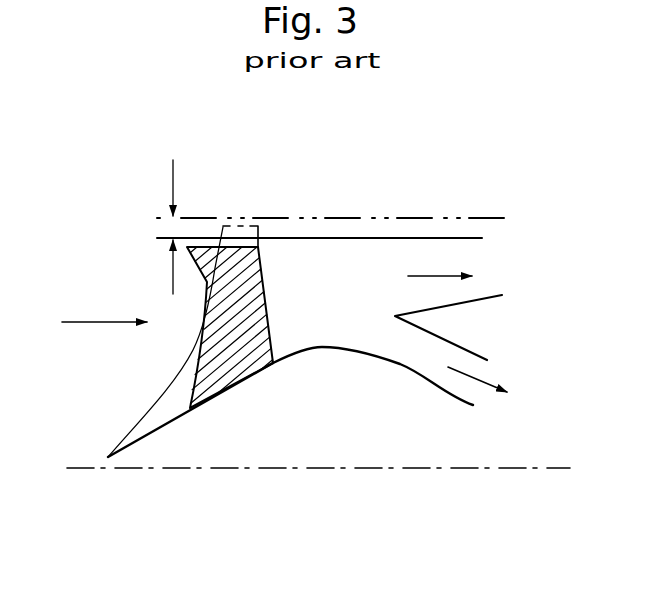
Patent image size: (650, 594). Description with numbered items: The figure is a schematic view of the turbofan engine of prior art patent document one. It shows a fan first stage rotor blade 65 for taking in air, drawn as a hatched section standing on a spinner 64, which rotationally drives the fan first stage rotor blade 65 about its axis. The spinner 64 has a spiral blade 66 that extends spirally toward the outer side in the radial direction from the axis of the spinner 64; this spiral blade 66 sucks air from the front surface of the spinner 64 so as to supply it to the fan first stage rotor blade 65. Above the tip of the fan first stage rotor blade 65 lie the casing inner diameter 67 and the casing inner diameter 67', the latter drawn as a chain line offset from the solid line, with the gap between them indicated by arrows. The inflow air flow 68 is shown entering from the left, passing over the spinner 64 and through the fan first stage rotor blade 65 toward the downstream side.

The spinner 64 is at (210, 447).
The fan first stage rotor blade 65 is at (245, 322).
The spiral blade 66 is at (157, 410).
The casing inner diameter 67 is at (319, 193).
The casing inner diameter 67' is at (331, 166).
The inflow air flow 68 is at (100, 322).